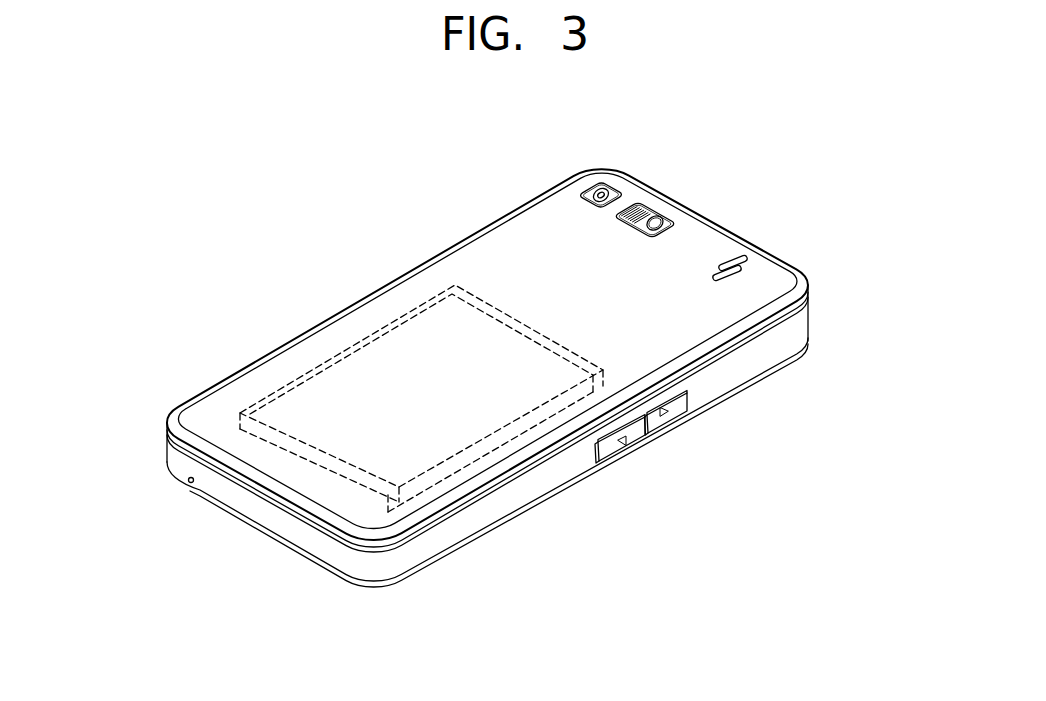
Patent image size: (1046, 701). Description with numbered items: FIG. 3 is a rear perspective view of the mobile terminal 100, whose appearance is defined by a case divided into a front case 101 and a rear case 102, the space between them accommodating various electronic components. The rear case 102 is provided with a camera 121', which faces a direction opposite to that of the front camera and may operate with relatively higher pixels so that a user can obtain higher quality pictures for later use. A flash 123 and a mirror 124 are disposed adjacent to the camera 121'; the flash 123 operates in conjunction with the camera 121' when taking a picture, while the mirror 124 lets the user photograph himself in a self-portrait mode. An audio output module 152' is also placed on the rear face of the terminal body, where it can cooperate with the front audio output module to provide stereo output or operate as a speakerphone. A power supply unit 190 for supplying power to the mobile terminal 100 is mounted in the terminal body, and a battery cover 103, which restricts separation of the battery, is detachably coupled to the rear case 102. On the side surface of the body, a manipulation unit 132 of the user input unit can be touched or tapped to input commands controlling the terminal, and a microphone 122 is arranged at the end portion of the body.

The mobile terminal 100 is at (446, 220).
The front case 101 is at (800, 332).
The rear case 102 is at (807, 309).
The battery cover 103 is at (297, 360).
The power supply unit 190 is at (421, 318).
The camera 121' is at (627, 171).
The flash 123 is at (642, 211).
The mirror 124 is at (658, 221).
The audio output module 152' is at (768, 239).
The manipulation unit 132 is at (622, 449).
The microphone 122 is at (188, 483).